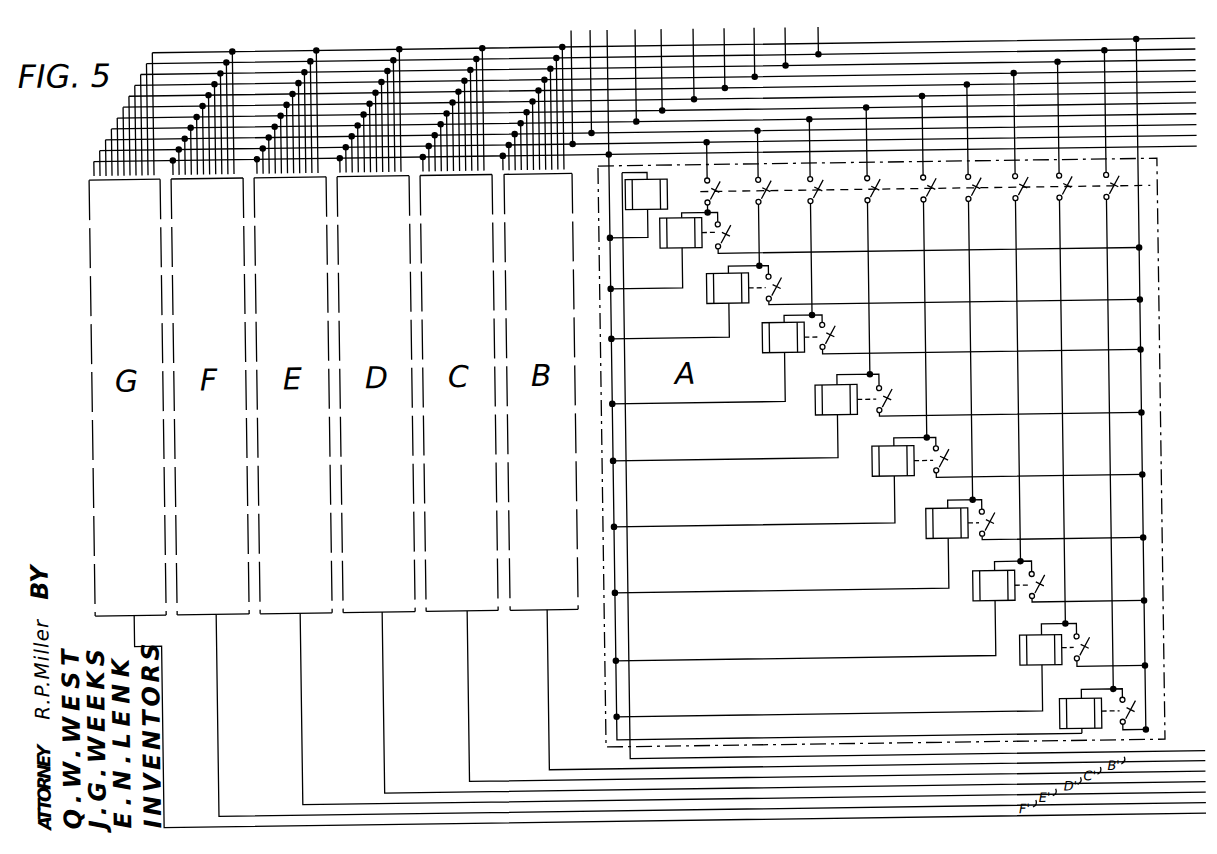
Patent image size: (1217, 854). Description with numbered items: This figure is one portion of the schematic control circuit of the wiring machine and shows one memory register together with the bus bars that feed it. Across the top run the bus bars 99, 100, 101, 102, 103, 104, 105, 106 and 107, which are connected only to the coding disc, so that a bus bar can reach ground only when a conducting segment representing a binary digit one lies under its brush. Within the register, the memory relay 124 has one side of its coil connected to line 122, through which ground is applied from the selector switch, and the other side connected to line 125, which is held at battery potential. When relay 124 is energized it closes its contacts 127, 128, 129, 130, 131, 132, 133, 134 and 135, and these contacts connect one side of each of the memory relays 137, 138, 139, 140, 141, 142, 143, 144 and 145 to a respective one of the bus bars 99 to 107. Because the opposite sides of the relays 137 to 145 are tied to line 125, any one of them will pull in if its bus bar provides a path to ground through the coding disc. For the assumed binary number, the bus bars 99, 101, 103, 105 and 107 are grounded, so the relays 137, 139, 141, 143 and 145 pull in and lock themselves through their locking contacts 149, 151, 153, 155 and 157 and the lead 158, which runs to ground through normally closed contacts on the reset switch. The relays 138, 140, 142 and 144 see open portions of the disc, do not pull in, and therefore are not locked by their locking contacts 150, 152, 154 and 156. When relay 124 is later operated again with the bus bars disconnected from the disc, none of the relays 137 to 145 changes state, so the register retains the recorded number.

The bus bar 99 is at (1187, 158).
The bus bar 100 is at (573, 34).
The bus bar 101 is at (905, 45).
The bus bar 102 is at (950, 46).
The bus bar 103 is at (996, 47).
The bus bar 104 is at (1045, 48).
The bus bar 105 is at (1174, 34).
The bus bar 106 is at (667, 48).
The bus bar 107 is at (1103, 54).
The line 122 is at (624, 426).
The memory relay 124 is at (653, 190).
The line 125 is at (611, 449).
The contacts 127 is at (740, 162).
The contacts 128 is at (793, 163).
The contacts 129 is at (845, 163).
The contacts 130 is at (898, 164).
The contacts 131 is at (953, 165).
The contacts 132 is at (998, 165).
The contacts 133 is at (1045, 166).
The contacts 134 is at (1089, 167).
The contacts 135 is at (1128, 167).
The relay 137 is at (680, 238).
The relay 138 is at (727, 292).
The relay 139 is at (779, 349).
The relay 140 is at (830, 408).
The relay 141 is at (889, 471).
The relay 142 is at (938, 532).
The relay 143 is at (987, 589).
The relay 144 is at (1011, 653).
The relay 145 is at (1060, 720).
The locking contacts 149 is at (731, 231).
The locking contacts 150 is at (781, 283).
The locking contacts 151 is at (834, 332).
The locking contacts 152 is at (890, 397).
The locking contacts 153 is at (942, 458).
The locking contacts 154 is at (991, 527).
The locking contacts 155 is at (1040, 589).
The locking contacts 156 is at (1084, 655).
The locking contacts 157 is at (1129, 717).
The lead 158 is at (1137, 40).